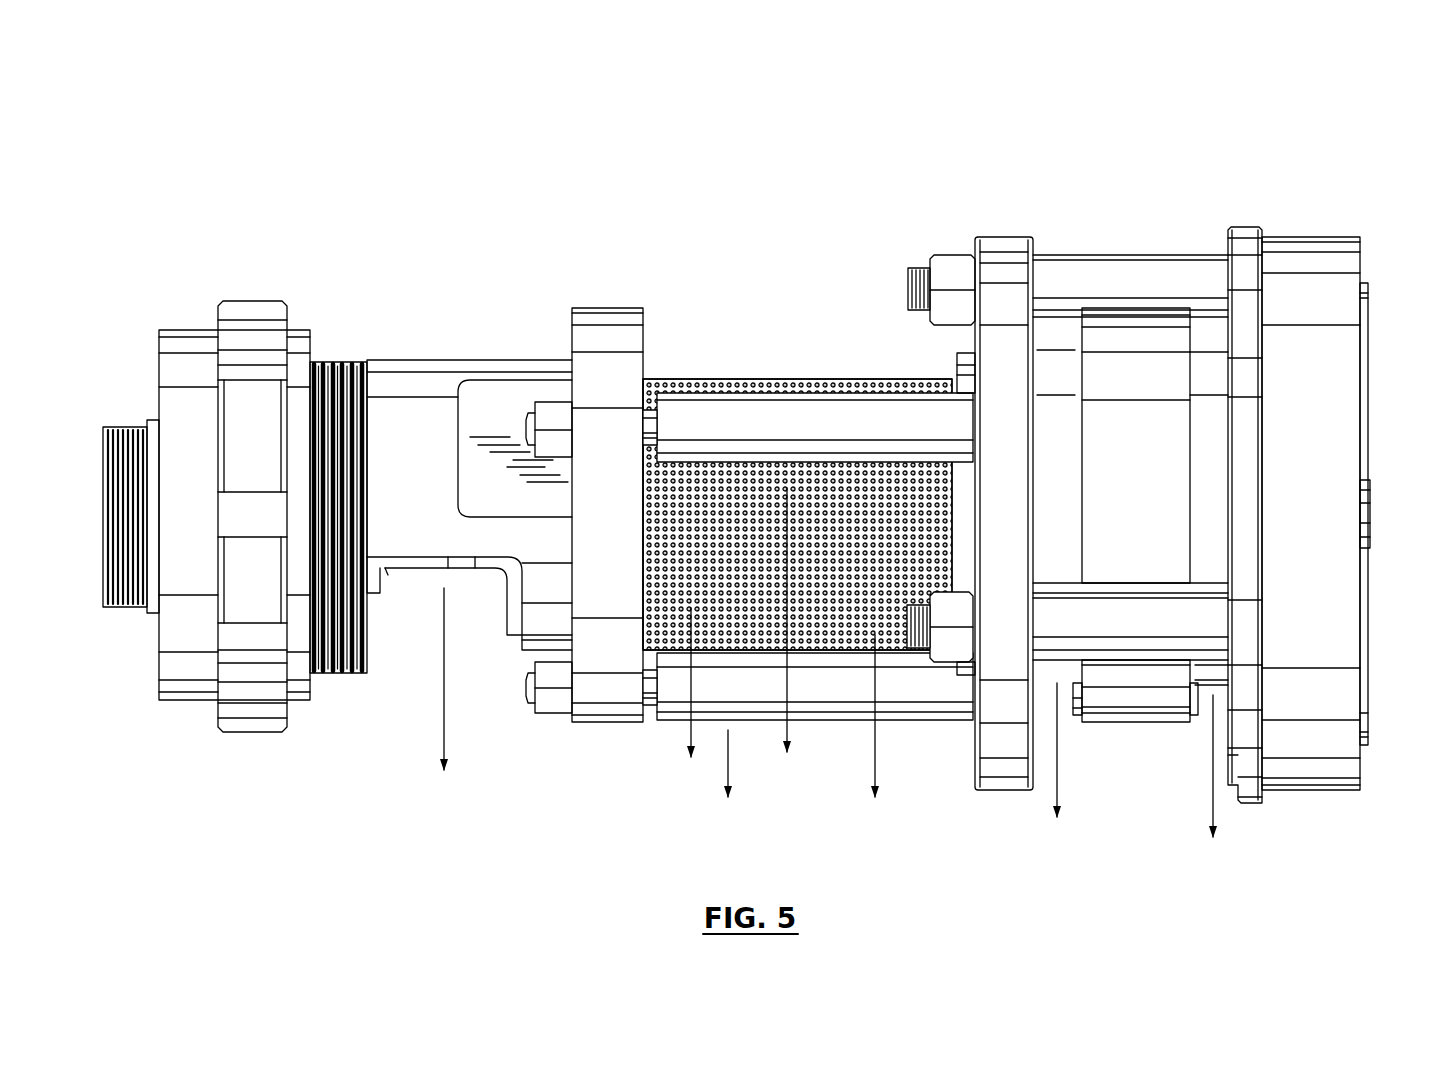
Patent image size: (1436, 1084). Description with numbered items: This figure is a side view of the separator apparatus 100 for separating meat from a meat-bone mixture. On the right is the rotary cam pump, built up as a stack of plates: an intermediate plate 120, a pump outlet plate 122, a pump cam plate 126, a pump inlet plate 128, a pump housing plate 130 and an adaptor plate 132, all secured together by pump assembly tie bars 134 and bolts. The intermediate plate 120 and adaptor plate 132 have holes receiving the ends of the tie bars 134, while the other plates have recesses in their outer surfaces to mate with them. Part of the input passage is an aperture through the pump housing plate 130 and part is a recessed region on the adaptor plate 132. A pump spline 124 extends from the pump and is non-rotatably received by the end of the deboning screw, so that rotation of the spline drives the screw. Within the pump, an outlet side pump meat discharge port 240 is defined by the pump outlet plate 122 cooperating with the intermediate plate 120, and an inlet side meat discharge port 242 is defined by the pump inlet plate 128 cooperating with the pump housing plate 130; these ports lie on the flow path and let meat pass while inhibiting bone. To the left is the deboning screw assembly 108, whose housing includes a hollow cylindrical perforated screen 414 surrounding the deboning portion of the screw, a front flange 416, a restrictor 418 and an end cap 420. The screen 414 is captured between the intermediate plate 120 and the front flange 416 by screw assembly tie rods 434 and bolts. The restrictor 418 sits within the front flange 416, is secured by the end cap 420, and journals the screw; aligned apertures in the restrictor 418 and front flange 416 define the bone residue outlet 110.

The separator apparatus 100 is at (178, 160).
The deboning screw assembly 108 is at (702, 768).
The bone residue outlet 110 is at (408, 672).
The intermediate plate 120 is at (1003, 250).
The pump outlet plate 122 is at (1060, 355).
The pump spline 124 is at (1368, 503).
The pump cam plate 126 is at (1153, 345).
The pump inlet plate 128 is at (1210, 355).
The pump housing plate 130 is at (1245, 235).
The adaptor plate 132 is at (1307, 408).
The pump assembly tie bars 134 is at (1112, 272).
The outlet side pump meat discharge port 240 is at (1045, 787).
The inlet side meat discharge port 242 is at (1193, 768).
The hollow cylindrical perforated screen 414 is at (717, 383).
The front flange 416 is at (432, 403).
The restrictor 418 is at (123, 430).
The end cap 420 is at (247, 310).
The screw assembly tie rods 434 is at (815, 425).